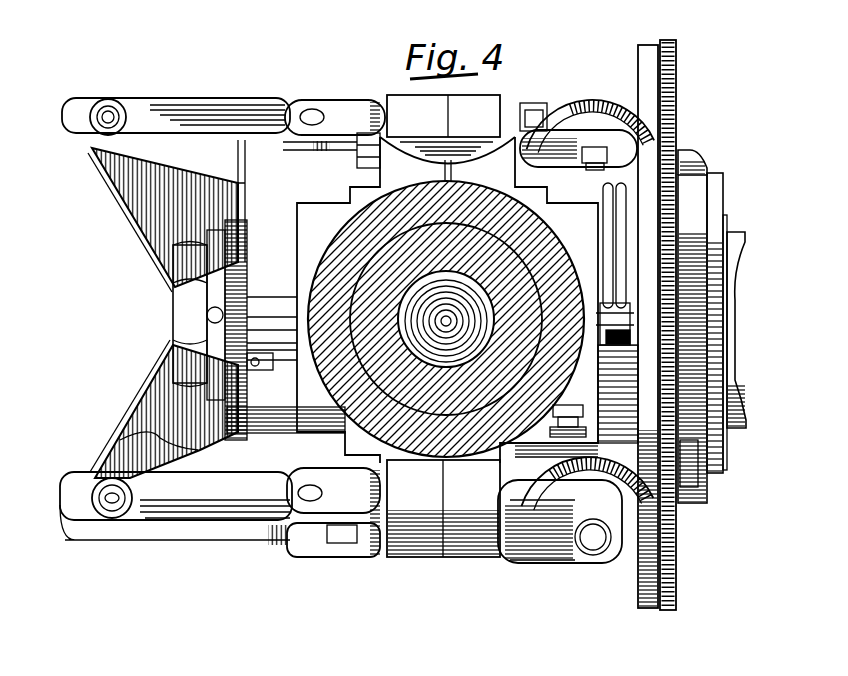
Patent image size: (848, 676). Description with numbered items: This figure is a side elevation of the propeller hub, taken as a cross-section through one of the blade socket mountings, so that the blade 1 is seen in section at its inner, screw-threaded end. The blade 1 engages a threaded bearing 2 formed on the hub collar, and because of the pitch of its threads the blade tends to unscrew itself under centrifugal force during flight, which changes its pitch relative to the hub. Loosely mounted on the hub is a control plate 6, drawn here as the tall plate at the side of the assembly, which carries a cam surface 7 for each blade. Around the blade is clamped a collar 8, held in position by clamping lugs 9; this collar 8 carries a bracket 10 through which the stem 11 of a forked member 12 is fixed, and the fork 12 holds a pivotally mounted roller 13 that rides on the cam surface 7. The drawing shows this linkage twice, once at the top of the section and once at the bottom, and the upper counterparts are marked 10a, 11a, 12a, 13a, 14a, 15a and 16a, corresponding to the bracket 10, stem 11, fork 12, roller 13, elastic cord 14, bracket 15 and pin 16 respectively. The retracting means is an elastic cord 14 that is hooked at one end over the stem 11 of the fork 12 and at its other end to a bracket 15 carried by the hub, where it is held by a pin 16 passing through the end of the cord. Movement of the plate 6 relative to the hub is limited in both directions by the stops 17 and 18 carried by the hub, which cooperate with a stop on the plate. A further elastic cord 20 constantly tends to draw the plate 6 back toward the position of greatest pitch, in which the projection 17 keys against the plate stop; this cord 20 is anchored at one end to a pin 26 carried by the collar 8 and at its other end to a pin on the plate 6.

The blade 1 is at (520, 208).
The threaded bearing 2 is at (410, 240).
The control plate 6 is at (674, 76).
The cam surface 7 is at (648, 75).
The collar 8 is at (562, 203).
The clamping lugs 9 is at (482, 152).
The bracket 10 is at (445, 572).
The upper clamp block 10a is at (410, 100).
The stem 11 is at (370, 556).
The upper link 11a is at (330, 104).
The forked member 12 is at (552, 556).
The upper link 12a is at (537, 104).
The roller 13 is at (604, 560).
The upper cam 13a is at (584, 103).
The elastic cord 14 is at (210, 542).
The upper arm 14a is at (186, 108).
The bracket 15 is at (130, 407).
The upper bracket 15a is at (150, 193).
The pin 16 is at (114, 522).
The upper pivot pin 16a is at (112, 110).
The stop 17 is at (684, 465).
The stop 18 is at (700, 168).
The elastic cord 20 is at (625, 362).
The pin 26 is at (640, 318).